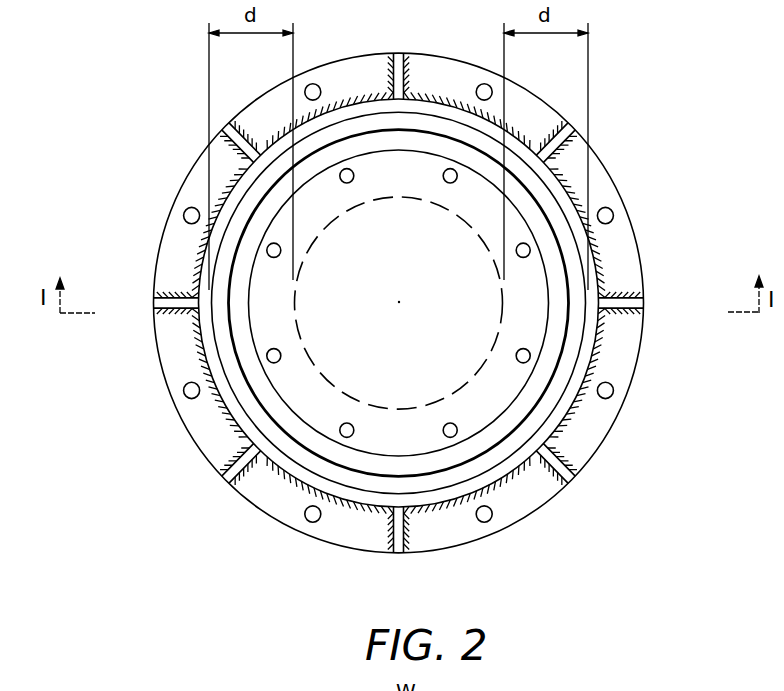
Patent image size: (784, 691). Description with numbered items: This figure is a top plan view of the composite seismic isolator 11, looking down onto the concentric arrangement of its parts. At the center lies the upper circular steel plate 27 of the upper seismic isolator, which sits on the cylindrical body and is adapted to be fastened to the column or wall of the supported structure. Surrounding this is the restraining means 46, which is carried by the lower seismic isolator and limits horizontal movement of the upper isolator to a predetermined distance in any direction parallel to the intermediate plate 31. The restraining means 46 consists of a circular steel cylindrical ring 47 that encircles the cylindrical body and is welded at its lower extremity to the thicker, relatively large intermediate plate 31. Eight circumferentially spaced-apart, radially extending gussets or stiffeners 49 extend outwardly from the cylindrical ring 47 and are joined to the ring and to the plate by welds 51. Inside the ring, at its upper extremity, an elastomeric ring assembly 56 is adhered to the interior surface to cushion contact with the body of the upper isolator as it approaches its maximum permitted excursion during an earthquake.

The composite seismic isolator 11 is at (238, 93).
The upper circular steel plate 27 is at (553, 320).
The intermediate plate 31 is at (610, 183).
The restraining means 46 is at (219, 178).
The circular steel cylindrical ring 47 is at (467, 505).
The gussets or stiffeners 49 is at (622, 293).
The welds 51 is at (640, 294).
The ring assembly 56 is at (558, 390).